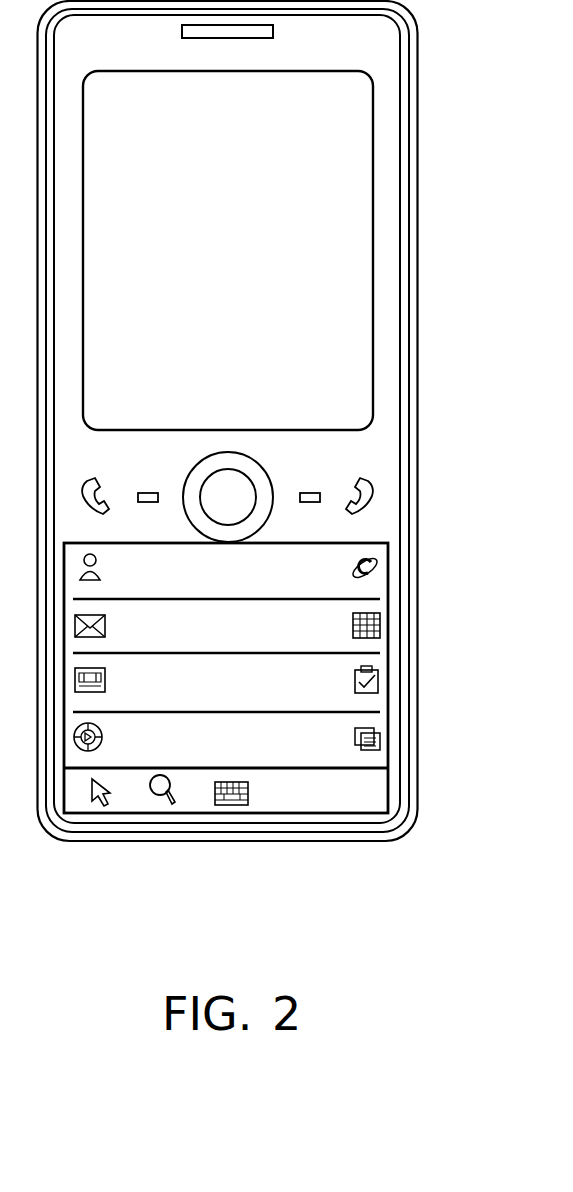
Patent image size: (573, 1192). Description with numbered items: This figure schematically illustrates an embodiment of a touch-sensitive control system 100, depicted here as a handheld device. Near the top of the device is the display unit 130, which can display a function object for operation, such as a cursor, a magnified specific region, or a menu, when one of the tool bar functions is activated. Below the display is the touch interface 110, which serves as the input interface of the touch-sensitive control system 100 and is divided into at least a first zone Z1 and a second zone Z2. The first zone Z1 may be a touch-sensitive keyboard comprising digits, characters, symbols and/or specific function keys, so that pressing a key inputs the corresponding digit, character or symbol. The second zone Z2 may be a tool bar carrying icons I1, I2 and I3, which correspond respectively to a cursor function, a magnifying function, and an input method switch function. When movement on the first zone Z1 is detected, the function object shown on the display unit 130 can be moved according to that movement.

The touch-sensitive control system 100 is at (408, 42).
The display unit 130 is at (376, 214).
The touch interface 110 is at (283, 738).
The first zone Z1 is at (375, 570).
The second zone Z2 is at (271, 870).
The icon I1 is at (97, 802).
The icon I2 is at (163, 808).
The icon I3 is at (232, 806).